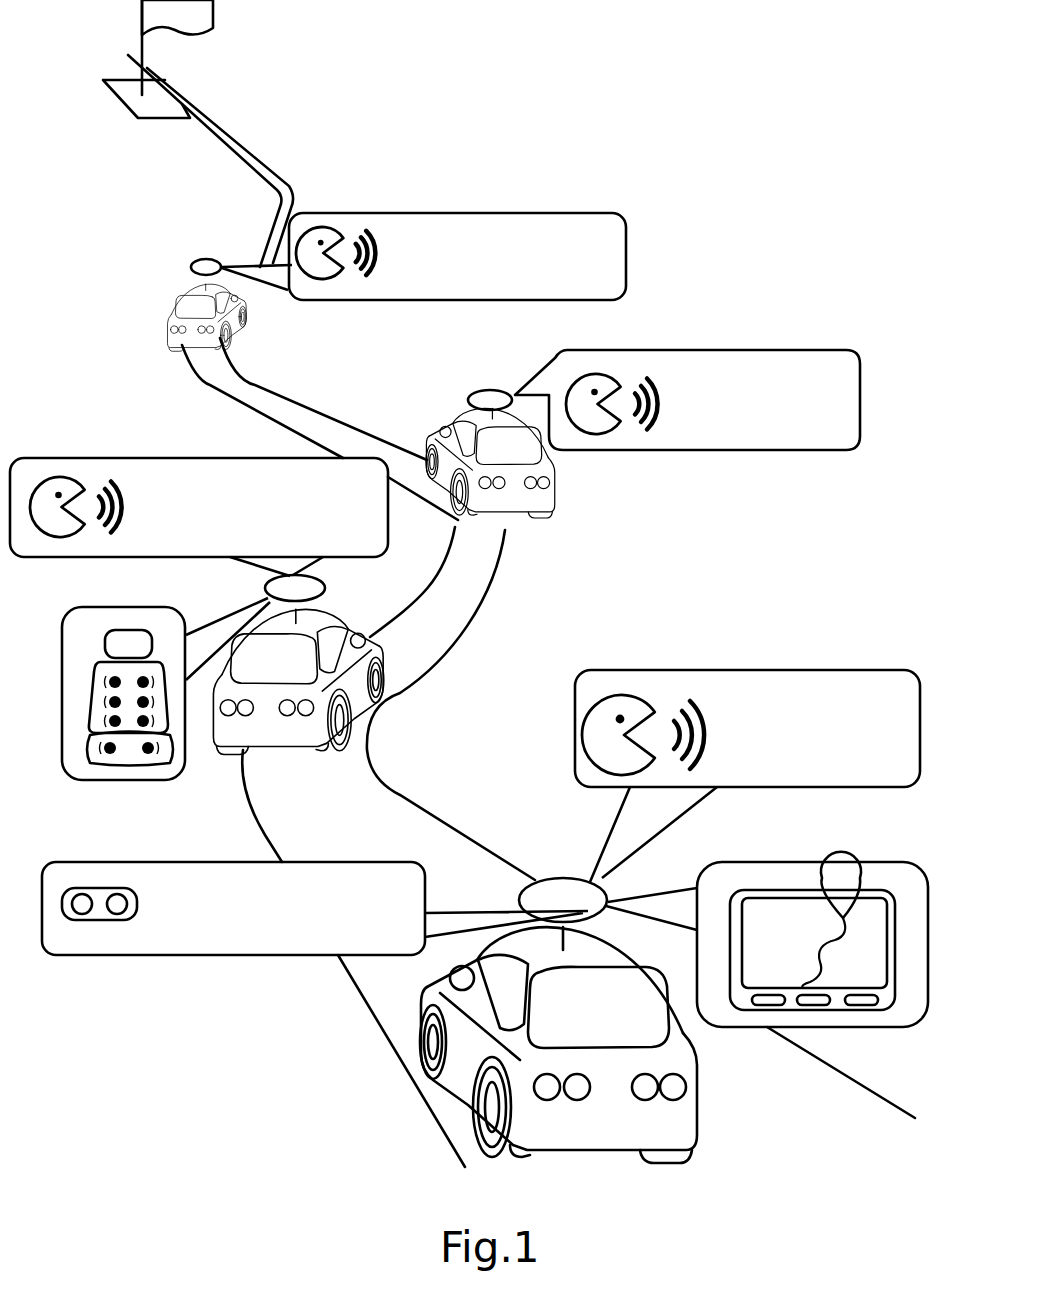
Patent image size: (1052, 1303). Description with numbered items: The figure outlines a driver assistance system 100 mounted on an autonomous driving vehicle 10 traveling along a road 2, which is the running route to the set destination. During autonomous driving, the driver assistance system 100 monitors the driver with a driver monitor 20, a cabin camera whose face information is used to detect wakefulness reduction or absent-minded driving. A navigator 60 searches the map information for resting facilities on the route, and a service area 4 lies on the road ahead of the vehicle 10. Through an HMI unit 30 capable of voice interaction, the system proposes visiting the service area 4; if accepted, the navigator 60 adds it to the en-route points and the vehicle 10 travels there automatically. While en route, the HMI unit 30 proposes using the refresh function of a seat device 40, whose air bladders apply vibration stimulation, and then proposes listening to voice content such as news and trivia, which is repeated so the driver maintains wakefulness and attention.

The road 2 is at (407, 812).
The service area 4 is at (168, 110).
The vehicle 10 is at (177, 300).
The driver monitor 20 is at (102, 890).
The HMI unit 30 is at (317, 213).
The seat device 40 is at (103, 642).
The navigator 60 is at (875, 880).
The driver assistance system 100 is at (200, 262).